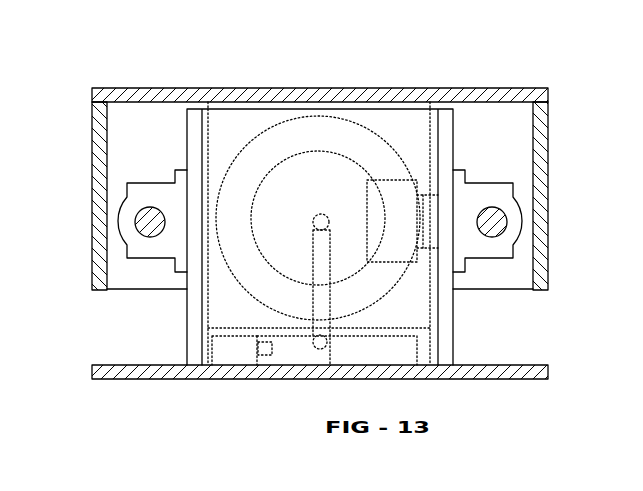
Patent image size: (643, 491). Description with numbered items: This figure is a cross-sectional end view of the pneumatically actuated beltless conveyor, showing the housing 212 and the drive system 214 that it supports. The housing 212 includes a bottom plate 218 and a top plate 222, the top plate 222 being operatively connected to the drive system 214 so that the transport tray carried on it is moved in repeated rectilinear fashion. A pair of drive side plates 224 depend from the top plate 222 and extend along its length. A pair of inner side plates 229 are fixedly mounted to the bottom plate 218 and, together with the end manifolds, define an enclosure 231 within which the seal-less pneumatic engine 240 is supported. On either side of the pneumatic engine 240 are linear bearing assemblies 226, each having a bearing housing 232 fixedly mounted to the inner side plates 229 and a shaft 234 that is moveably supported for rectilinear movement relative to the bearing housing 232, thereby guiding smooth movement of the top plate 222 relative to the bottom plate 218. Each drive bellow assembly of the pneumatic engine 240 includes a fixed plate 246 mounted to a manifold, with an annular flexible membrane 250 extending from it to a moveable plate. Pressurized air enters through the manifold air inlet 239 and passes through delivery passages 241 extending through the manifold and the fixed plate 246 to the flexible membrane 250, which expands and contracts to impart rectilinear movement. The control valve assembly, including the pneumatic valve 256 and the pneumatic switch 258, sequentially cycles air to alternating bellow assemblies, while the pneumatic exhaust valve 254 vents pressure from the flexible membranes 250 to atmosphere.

The housing 212 is at (80, 272).
The drive system 214 is at (462, 121).
The bottom plate 218 is at (485, 356).
The top plate 222 is at (365, 99).
The drive side plates 224 is at (96, 131).
The linear bearing assembly 226 is at (521, 188).
The inner side plates 229 is at (192, 135).
The enclosure 231 is at (206, 313).
The bearing housing 232 is at (142, 192).
The shaft 234 is at (133, 233).
The air inlet 239 is at (314, 344).
The seal-less pneumatic engine 240 is at (249, 130).
The delivery passages 241 is at (312, 232).
The fixed plate 246 is at (300, 168).
The flexible membrane 250 is at (258, 135).
The pneumatic exhaust valve 254 is at (232, 347).
The pneumatic valve 256 is at (354, 353).
The pneumatic switch 258 is at (372, 168).